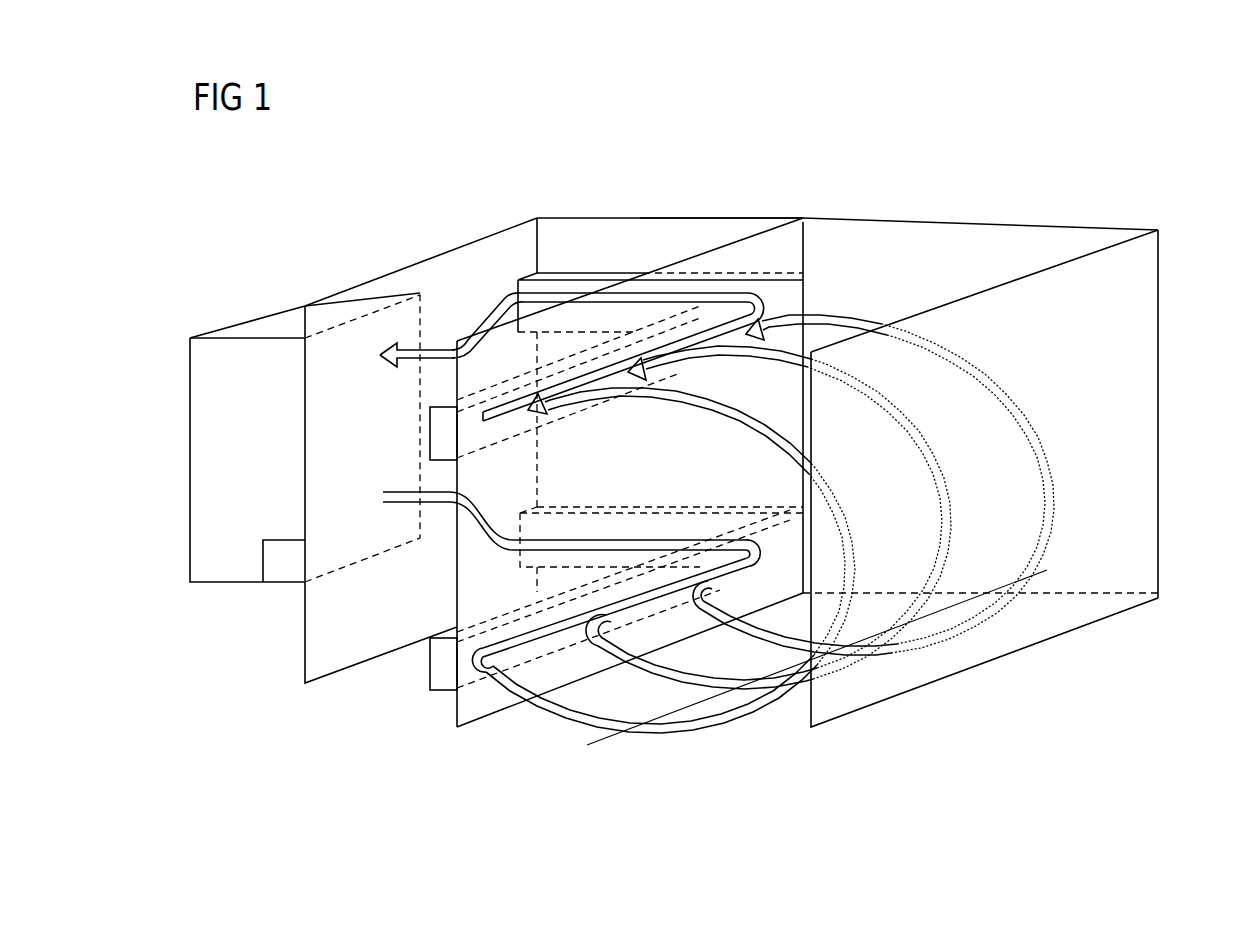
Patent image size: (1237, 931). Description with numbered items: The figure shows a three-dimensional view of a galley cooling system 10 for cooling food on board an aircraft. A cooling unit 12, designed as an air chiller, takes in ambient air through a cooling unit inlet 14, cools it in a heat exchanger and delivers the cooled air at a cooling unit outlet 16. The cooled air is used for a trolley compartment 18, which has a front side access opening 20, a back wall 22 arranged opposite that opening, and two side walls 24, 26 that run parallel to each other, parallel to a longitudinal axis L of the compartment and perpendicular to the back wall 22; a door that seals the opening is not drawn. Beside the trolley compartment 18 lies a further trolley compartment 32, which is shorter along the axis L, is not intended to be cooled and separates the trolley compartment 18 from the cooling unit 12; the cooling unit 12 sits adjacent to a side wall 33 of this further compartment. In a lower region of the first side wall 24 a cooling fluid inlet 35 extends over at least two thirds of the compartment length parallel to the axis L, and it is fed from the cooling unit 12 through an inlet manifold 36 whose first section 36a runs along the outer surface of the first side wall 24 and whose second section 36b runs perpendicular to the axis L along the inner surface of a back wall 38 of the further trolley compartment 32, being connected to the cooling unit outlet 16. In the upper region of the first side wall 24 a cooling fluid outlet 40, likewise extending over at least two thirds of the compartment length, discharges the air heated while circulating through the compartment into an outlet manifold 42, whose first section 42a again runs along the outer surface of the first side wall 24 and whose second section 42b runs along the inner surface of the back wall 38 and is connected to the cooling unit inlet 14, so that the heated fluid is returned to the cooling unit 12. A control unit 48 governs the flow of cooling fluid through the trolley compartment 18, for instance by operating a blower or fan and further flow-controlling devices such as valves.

The galley cooling system 10 is at (1035, 158).
The cooling unit 12 is at (282, 318).
The cooling unit inlet 14 is at (380, 357).
The cooling unit outlet 16 is at (382, 505).
The trolley compartment 18 is at (1142, 337).
The front side access opening 20 is at (737, 708).
The back wall 22 is at (929, 245).
The first side wall 24 is at (762, 255).
The side wall 26 is at (1150, 268).
The further trolley compartment 32 is at (592, 211).
The side wall of the further trolley compartment 33 is at (472, 263).
The cooling fluid inlet 35 is at (545, 637).
The inlet manifold 36 is at (430, 674).
The first section of the inlet manifold 36a is at (503, 628).
The second section of the inlet manifold 36b is at (603, 512).
The back wall of the further trolley compartment 38 is at (688, 242).
The cooling fluid outlet 40 is at (805, 296).
The outlet manifold 42 is at (438, 428).
The first section of the outlet manifold 42a is at (497, 437).
The second section of the outlet manifold 42b is at (592, 276).
The control unit 48 is at (288, 570).
The longitudinal axis L is at (603, 747).